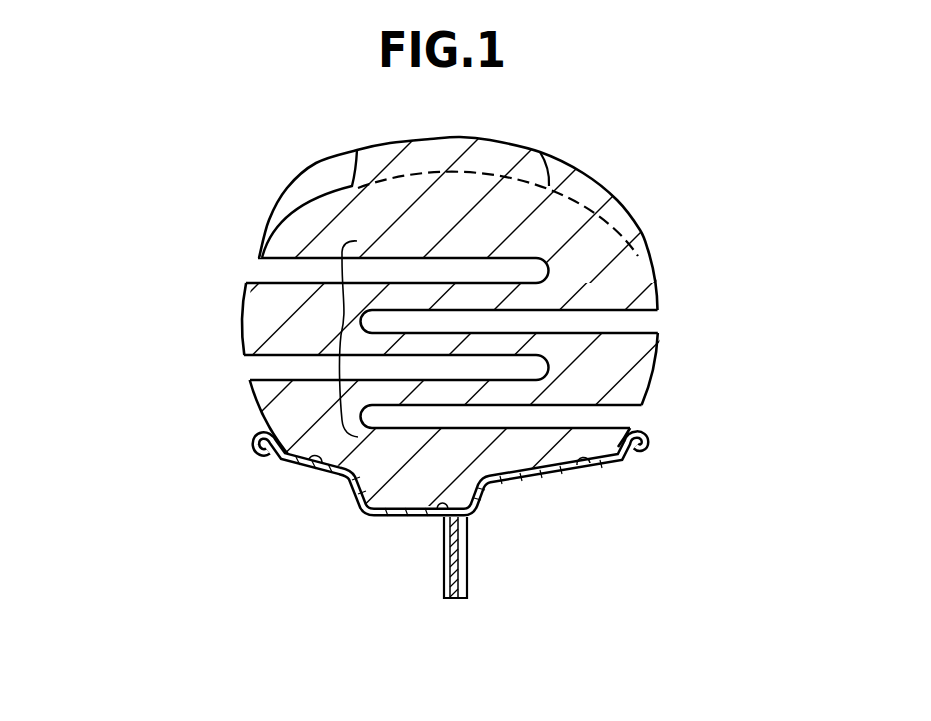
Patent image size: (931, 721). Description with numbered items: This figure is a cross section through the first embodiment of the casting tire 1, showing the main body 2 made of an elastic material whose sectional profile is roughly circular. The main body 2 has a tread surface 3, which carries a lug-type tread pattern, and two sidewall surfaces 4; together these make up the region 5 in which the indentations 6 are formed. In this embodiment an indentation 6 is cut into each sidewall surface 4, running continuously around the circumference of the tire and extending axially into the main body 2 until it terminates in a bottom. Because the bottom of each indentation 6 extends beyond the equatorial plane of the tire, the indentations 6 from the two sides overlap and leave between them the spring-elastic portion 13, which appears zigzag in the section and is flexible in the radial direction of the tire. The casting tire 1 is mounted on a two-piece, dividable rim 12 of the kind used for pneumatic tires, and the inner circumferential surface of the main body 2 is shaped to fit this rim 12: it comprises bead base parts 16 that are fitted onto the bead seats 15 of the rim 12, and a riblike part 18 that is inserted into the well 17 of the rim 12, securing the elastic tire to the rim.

The casting tire 1 is at (706, 220).
The main body 2 is at (446, 303).
The tread surface 3 is at (563, 148).
The sidewall surface 4 is at (175, 310).
The region 5 is at (190, 177).
The indentation 6 is at (255, 272).
The two-piece rim 12 is at (470, 553).
The spring-elastic portion 13 is at (340, 336).
The bead seat 15 is at (315, 472).
The bead base part 16 is at (545, 474).
The well 17 is at (433, 520).
The riblike part 18 is at (397, 498).